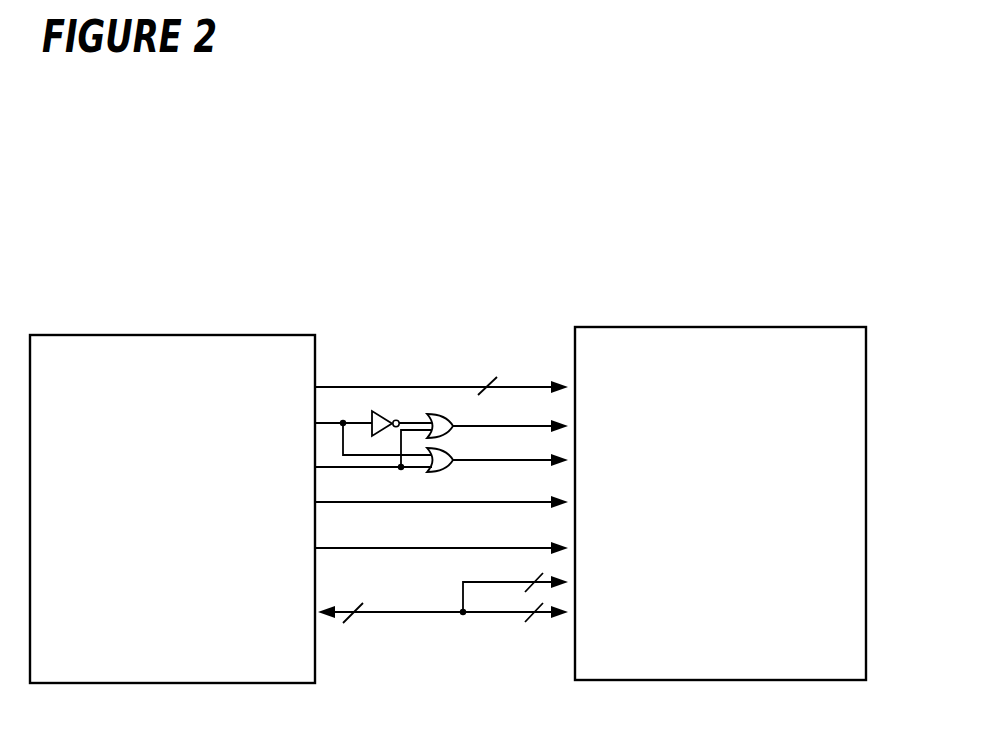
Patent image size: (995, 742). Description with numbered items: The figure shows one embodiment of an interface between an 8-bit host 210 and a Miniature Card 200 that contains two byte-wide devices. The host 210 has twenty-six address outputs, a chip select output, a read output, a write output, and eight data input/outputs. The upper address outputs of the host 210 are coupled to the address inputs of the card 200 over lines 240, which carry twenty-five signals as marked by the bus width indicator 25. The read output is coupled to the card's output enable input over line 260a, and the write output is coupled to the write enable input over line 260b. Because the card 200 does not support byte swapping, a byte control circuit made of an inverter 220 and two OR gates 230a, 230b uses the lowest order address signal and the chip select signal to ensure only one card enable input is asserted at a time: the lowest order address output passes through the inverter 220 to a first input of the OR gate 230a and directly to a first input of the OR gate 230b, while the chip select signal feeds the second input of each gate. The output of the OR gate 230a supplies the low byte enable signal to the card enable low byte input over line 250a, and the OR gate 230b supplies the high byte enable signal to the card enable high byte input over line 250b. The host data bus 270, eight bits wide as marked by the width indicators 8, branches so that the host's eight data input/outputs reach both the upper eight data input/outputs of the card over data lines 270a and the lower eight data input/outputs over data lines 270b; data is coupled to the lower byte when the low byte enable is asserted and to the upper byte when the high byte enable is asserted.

The Miniature Card 200 is at (720, 451).
The 8-bit host 210 is at (172, 458).
The inverter 220 is at (373, 422).
The OR gate 230a is at (458, 417).
The OR gate 230b is at (458, 452).
The lines 240 is at (342, 385).
The address bus width 25 is at (483, 375).
The line 250a is at (510, 423).
The line 250b is at (510, 458).
The line 260a is at (495, 502).
The line 260b is at (495, 548).
The host data bus 270 is at (382, 612).
The data lines 270a is at (515, 586).
The data lines 270b is at (515, 603).
The data bus width 8 is at (444, 589).